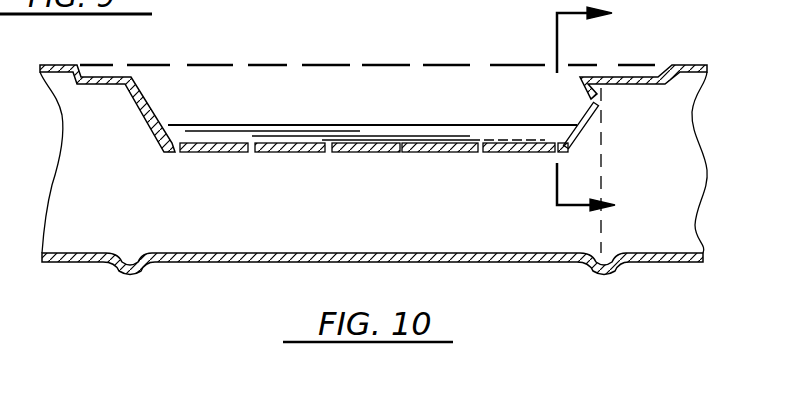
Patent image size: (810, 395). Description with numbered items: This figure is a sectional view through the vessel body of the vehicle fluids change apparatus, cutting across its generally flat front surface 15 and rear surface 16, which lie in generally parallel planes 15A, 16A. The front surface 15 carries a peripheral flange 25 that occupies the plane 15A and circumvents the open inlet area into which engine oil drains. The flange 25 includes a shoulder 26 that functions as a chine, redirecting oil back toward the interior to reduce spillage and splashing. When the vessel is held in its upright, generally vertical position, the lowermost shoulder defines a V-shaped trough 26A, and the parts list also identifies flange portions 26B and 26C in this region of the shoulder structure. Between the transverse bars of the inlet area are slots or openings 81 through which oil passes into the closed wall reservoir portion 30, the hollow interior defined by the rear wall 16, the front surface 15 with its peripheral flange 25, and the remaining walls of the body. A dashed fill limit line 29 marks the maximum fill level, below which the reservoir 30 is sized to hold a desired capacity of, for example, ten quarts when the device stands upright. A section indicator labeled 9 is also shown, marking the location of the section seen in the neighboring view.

The section line of FIG. 9 is at (586, 122).
The front surface 15 is at (687, 53).
The plane 15A is at (382, 54).
The rear surface 16 is at (204, 274).
The plane 16A is at (665, 272).
The peripheral flange 25 is at (217, 92).
The shoulder 26 is at (148, 98).
The trough 26A is at (555, 96).
The flange 26B is at (583, 91).
The flange 26C is at (577, 113).
The fill limit line 29 is at (612, 144).
The closed wall reservoir portion 30 is at (321, 188).
The slots or openings 81 is at (172, 163).